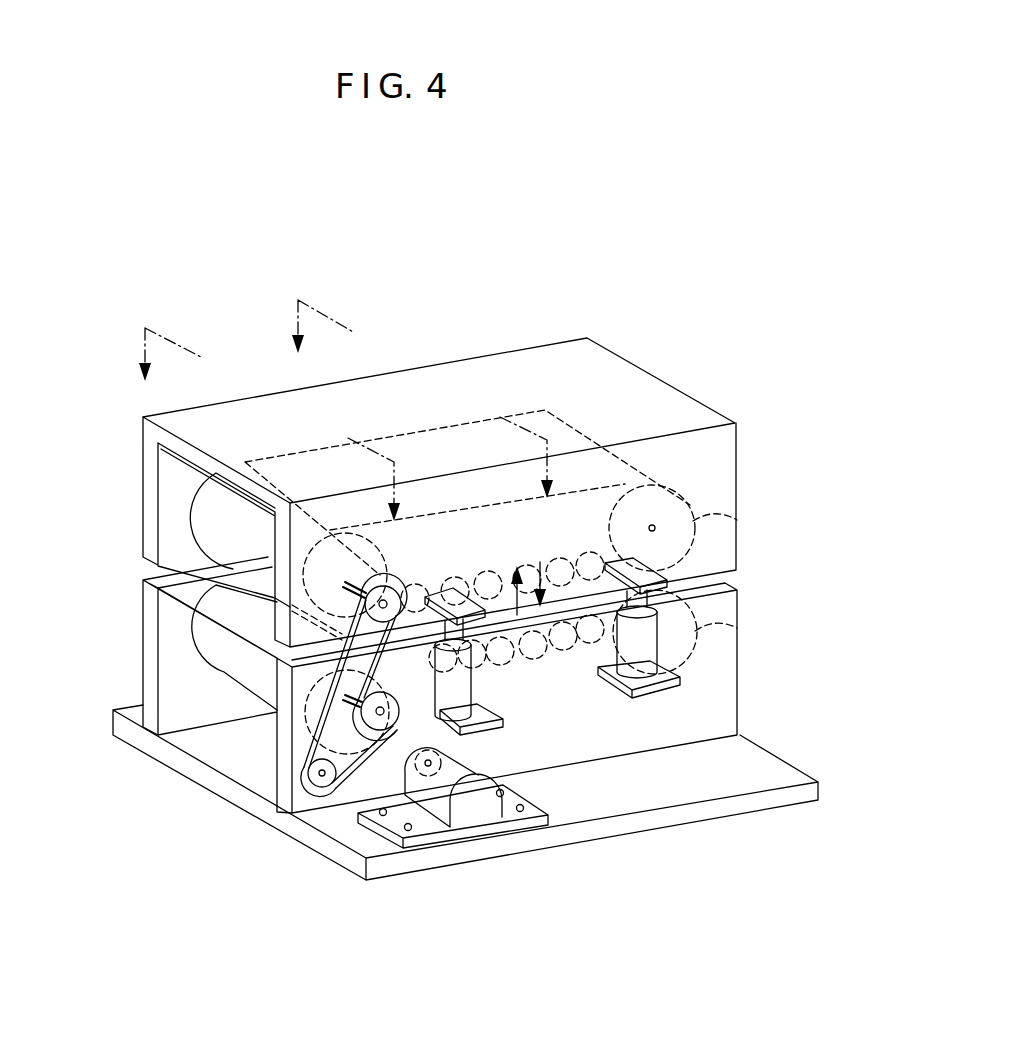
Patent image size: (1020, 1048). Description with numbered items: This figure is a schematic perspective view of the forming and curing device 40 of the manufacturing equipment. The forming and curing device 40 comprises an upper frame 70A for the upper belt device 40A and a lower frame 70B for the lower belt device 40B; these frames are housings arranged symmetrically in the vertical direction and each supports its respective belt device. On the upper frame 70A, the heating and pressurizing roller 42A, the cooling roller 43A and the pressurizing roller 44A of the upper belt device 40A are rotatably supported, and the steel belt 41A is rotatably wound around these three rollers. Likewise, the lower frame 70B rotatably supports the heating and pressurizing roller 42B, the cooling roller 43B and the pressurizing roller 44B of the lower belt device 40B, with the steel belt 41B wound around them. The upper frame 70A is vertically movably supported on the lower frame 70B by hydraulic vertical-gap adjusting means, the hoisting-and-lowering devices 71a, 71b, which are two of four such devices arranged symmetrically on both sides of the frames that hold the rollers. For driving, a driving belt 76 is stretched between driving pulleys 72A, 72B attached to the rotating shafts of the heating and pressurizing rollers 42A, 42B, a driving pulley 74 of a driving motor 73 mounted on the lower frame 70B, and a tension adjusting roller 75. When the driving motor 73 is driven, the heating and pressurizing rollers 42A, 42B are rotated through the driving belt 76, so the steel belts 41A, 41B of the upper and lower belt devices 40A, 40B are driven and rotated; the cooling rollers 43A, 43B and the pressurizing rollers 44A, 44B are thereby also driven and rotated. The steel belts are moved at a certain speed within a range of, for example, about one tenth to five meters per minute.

The forming and curing device 40 is at (566, 287).
The upper frame 70A is at (228, 430).
The lower frame 70B is at (195, 808).
The upper belt device 40A is at (166, 508).
The lower belt device 40B is at (166, 656).
The steel belt 41A is at (552, 560).
The steel belt 41B is at (562, 698).
The heating and pressurizing roller 42A is at (346, 556).
The heating and pressurizing roller 42B is at (350, 725).
The cooling roller 43A is at (740, 521).
The cooling roller 43B is at (740, 629).
The pressurizing roller 44A is at (630, 528).
The pressurizing roller 44B is at (592, 641).
The hoisting-and-lowering device 71a is at (478, 692).
The hoisting-and-lowering device 71b is at (630, 642).
The driving pulley 72A is at (396, 588).
The driving pulley 72B is at (392, 720).
The driving motor 73 is at (469, 832).
The driving pulley 74 is at (447, 766).
The tension adjusting roller 75 is at (321, 790).
The driving belt 76 is at (310, 720).